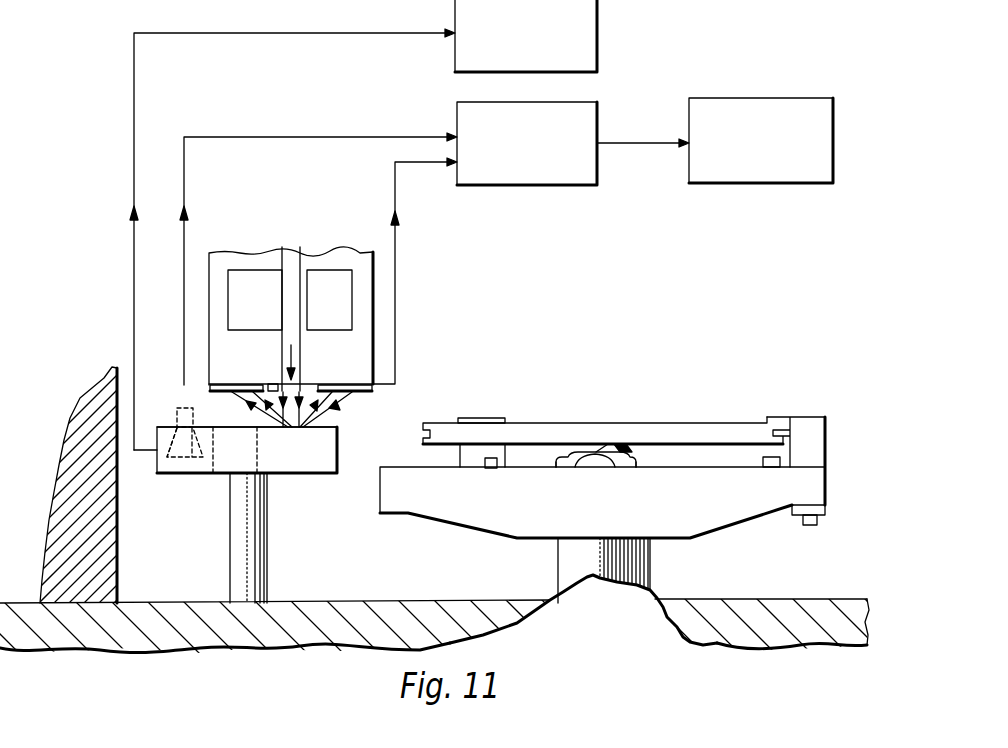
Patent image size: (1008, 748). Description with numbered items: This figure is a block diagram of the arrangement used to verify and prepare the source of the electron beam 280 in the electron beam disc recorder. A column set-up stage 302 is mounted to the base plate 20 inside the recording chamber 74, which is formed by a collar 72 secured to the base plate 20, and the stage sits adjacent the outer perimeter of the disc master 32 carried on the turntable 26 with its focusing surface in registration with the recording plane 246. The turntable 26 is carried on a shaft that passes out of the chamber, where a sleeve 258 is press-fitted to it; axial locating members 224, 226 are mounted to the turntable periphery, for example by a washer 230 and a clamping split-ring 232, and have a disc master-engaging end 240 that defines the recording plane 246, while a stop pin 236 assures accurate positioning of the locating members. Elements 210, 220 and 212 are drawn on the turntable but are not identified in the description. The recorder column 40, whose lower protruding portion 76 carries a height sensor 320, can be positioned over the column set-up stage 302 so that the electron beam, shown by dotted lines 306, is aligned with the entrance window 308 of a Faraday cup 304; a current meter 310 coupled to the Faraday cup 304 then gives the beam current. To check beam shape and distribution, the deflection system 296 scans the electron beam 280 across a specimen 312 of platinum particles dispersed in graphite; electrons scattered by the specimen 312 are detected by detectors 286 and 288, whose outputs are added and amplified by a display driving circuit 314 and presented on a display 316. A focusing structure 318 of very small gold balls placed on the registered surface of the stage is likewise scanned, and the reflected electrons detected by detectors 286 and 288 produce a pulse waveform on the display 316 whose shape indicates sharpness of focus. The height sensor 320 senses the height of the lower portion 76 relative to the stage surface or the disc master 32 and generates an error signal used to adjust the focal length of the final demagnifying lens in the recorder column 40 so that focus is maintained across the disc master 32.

The current meter 310 is at (597, 22).
The display driving circuit 314 is at (597, 171).
The display 316 is at (833, 171).
The recorder column 40 is at (319, 319).
The deflection system 296 is at (332, 275).
The electron beam 280 is at (295, 338).
The detector 286 is at (227, 384).
The detector 288 is at (366, 396).
The height sensor 320 is at (270, 383).
The lower protruding portion of the recorder column 76 is at (377, 347).
The dotted lines representing the electron beam 306 is at (179, 415).
The focusing structure 318 is at (243, 427).
The specimen 312 is at (293, 428).
The entrance window 308 is at (176, 432).
The Faraday cup 304 is at (193, 467).
The column set-up stage 302 is at (230, 489).
The collar 72 is at (63, 488).
The recording chamber 74 is at (385, 590).
The axial locating member 226 is at (480, 418).
The recording plane 246 is at (543, 423).
The disc master 32 is at (603, 412).
The disc master-engaging end 240 is at (765, 426).
The axial locating member 224 is at (826, 447).
The washer 230 is at (827, 507).
The clamping split-ring 232 is at (827, 515).
The stop pin 236 is at (492, 469).
The spring 210 is at (560, 462).
The bellows 220 is at (605, 461).
The stopper 212 is at (628, 470).
The turntable 26 is at (738, 517).
The sleeve 258 is at (650, 563).
The base plate 20 is at (793, 599).